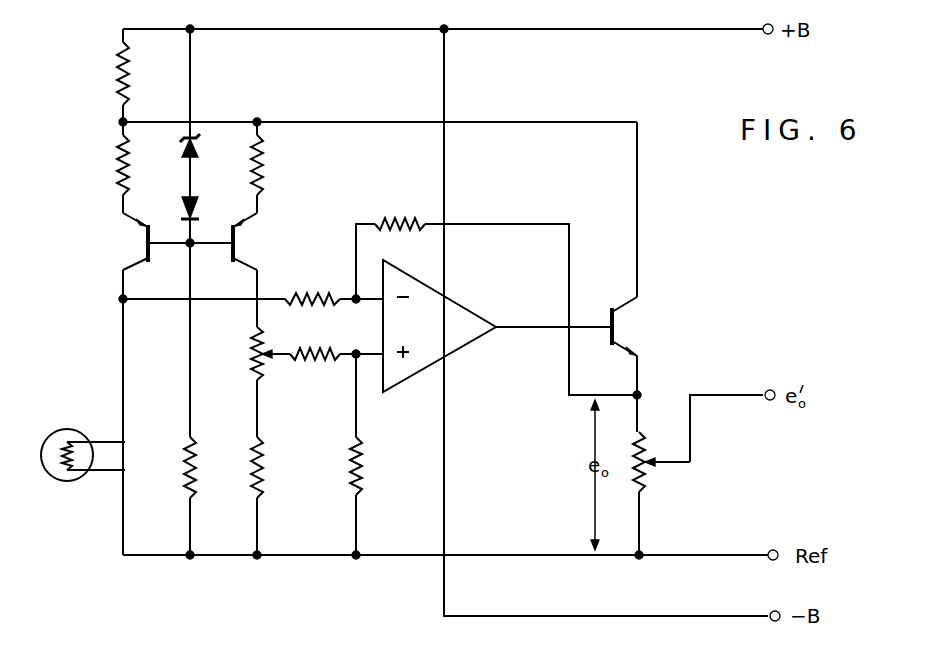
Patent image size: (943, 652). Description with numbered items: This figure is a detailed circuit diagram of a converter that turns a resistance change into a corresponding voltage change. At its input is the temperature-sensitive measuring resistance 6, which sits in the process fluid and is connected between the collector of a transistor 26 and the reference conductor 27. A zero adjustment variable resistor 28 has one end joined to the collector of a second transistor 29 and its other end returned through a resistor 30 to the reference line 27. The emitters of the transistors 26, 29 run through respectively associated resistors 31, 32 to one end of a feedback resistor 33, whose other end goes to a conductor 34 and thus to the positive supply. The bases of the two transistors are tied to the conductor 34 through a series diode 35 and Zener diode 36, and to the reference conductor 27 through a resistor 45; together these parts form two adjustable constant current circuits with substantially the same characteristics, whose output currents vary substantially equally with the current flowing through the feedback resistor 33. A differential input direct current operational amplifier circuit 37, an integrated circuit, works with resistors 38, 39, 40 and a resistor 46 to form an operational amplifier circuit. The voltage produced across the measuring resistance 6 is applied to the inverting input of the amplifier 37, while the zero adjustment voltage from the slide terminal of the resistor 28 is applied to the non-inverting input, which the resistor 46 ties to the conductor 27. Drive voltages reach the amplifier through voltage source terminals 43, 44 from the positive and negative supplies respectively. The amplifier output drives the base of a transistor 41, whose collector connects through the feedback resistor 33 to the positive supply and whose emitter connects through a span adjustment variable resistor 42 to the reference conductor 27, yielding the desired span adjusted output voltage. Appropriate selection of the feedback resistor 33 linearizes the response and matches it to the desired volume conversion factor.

The temperature-sensitive measuring resistance 6 is at (60, 480).
The transistor 26 is at (145, 247).
The reference conductor 27 is at (297, 558).
The zero adjustment variable resistor 28 is at (254, 358).
The transistor 29 is at (240, 247).
The resistor 30 is at (262, 480).
The resistor 31 is at (121, 172).
The resistor 32 is at (262, 160).
The feedback resistor 33 is at (122, 80).
The conductor 34 is at (303, 29).
The diode 35 is at (182, 210).
The Zener diode 36 is at (178, 158).
The operational amplifier circuit 37 is at (443, 341).
The resistor 38 is at (310, 292).
The resistor 39 is at (400, 217).
The resistor 40 is at (312, 352).
The transistor 41 is at (622, 330).
The span adjustment variable resistor 42 is at (645, 450).
The voltage source terminal 43 is at (452, 295).
The voltage source terminal 44 is at (452, 366).
The resistor 45 is at (184, 453).
The resistor 46 is at (362, 480).